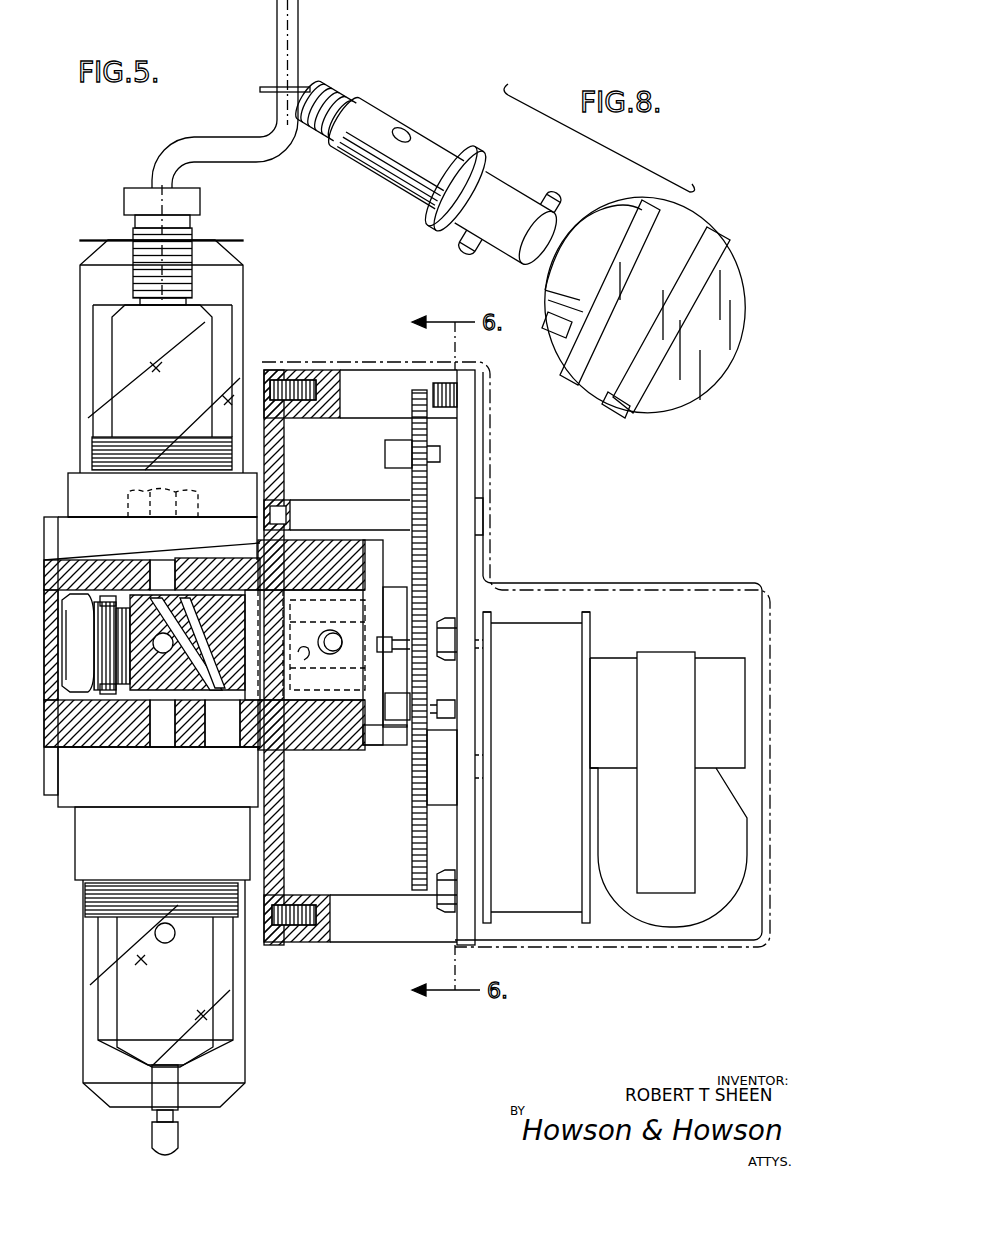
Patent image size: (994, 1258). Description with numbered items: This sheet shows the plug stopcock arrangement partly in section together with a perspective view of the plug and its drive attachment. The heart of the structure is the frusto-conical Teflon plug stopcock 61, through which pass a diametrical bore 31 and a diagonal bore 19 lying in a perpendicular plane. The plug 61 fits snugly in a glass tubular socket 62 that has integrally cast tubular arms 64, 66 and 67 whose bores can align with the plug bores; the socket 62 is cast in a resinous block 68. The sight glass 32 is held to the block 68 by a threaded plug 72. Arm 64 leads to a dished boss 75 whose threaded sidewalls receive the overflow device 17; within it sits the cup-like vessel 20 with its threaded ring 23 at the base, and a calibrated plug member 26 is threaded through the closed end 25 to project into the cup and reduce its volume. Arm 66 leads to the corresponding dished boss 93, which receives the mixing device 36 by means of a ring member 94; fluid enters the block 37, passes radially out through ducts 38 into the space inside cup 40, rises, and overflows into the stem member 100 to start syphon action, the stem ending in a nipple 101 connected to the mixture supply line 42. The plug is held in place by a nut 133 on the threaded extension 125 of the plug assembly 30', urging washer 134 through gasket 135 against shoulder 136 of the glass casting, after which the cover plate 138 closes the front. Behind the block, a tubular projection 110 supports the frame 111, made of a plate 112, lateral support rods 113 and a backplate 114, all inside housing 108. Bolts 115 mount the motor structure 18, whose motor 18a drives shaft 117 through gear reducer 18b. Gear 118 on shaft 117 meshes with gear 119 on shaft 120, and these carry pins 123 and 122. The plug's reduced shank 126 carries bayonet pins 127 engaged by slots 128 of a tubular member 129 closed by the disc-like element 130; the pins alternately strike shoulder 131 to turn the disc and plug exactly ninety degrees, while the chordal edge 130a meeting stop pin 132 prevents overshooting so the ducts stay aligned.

In FIG. 5, the overflow device 17 is at (244, 320).
In FIG. 5, the motor structure 18 is at (620, 660).
In FIG. 5, the motor 18a is at (702, 658).
In FIG. 5, the gear reducer 18b is at (528, 630).
In FIG. 5, the bore 19 is at (183, 612).
In FIG. 8, the bore 19 is at (404, 101).
In FIG. 5, the cup-like vessel 20 is at (110, 360).
In FIG. 5, the ring 23 is at (105, 440).
In FIG. 5, the closed end 25 is at (80, 285).
In FIG. 5, the plug member 26 is at (200, 205).
In FIG. 8, the plug assembly 30' is at (415, 116).
In FIG. 5, the bore 31 is at (140, 688).
In FIG. 8, the bore 31 is at (377, 190).
In FIG. 5, the sight glass 32 is at (288, 98).
In FIG. 5, the mixing device 36 is at (80, 993).
In FIG. 5, the block 37 is at (115, 950).
In FIG. 5, the ducts 38 is at (165, 944).
In FIG. 5, the cup 40 is at (88, 1022).
In FIG. 5, the mixture supply line 42 is at (160, 1138).
In FIG. 5, the plug stopcock 61 is at (124, 596).
In FIG. 8, the plug stopcock 61 is at (461, 164).
In FIG. 5, the tubular socket 62 is at (194, 705).
In FIG. 5, the tubular arm 64 is at (155, 600).
In FIG. 5, the tubular arm 66 is at (162, 652).
In FIG. 5, the tubular arm 67 is at (240, 710).
In FIG. 5, the resinous block 68 is at (68, 520).
In FIG. 5, the plug 72 is at (128, 500).
In FIG. 5, the dished boss 75 is at (72, 483).
In FIG. 5, the dished boss 93 is at (88, 836).
In FIG. 5, the ring member 94 is at (120, 916).
In FIG. 5, the stem member 100 is at (150, 1090).
In FIG. 5, the nipple 101 is at (155, 1116).
In FIG. 5, the housing 108 is at (492, 472).
In FIG. 5, the tubular projection 110 is at (322, 750).
In FIG. 5, the frame 111 is at (352, 372).
In FIG. 5, the plate 112 is at (284, 474).
In FIG. 5, the lateral support rods 113 is at (380, 386).
In FIG. 5, the backplate 114 is at (476, 556).
In FIG. 5, the bolts 115 is at (444, 628).
In FIG. 5, the shaft 117 is at (486, 760).
In FIG. 5, the gear 118 is at (412, 815).
In FIG. 5, the gear 119 is at (412, 486).
In FIG. 5, the shaft 120 is at (326, 514).
In FIG. 5, the pin 122 is at (385, 452).
In FIG. 5, the pin 123 is at (396, 716).
In FIG. 5, the threaded extension 125 is at (102, 600).
In FIG. 8, the threaded extension 125 is at (352, 85).
In FIG. 5, the shank 126 is at (272, 678).
In FIG. 8, the shank 126 is at (526, 193).
In FIG. 5, the bayonet pins 127 is at (330, 642).
In FIG. 8, the bayonet pins 127 is at (503, 212).
In FIG. 5, the slots 128 is at (308, 661).
In FIG. 8, the slots 128 is at (558, 318).
In FIG. 5, the tubular member 129 is at (348, 725).
In FIG. 8, the tubular member 129 is at (606, 222).
In FIG. 5, the disc-like element 130 is at (392, 752).
In FIG. 8, the disc-like element 130 is at (740, 290).
In FIG. 5, the edge 130a is at (374, 548).
In FIG. 8, the edge 130a is at (565, 346).
In FIG. 5, the shoulder 131 is at (393, 596).
In FIG. 8, the shoulder 131 is at (614, 390).
In FIG. 5, the pin 132 is at (394, 646).
In FIG. 5, the nut 133 is at (75, 650).
In FIG. 5, the washer 134 is at (70, 695).
In FIG. 5, the gasket 135 is at (95, 694).
In FIG. 5, the shoulder 136 is at (112, 700).
In FIG. 5, the cover plate 138 is at (44, 540).